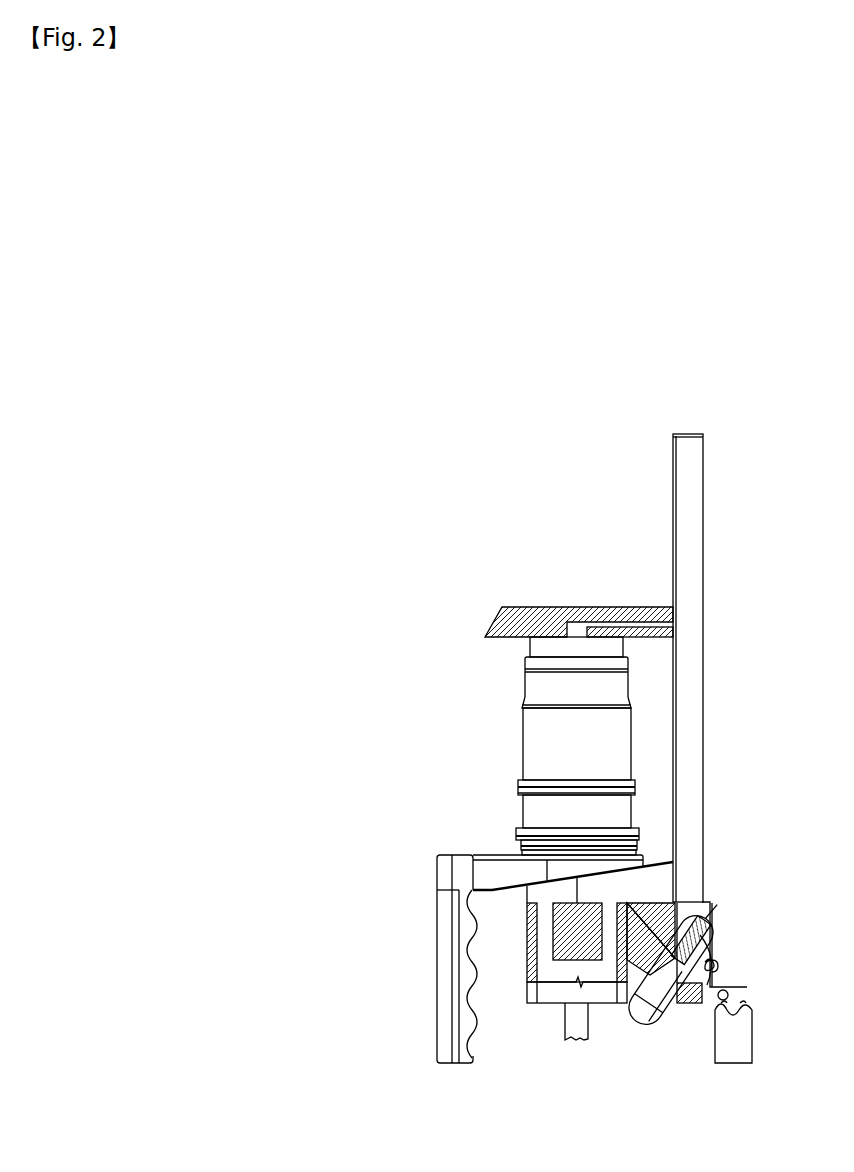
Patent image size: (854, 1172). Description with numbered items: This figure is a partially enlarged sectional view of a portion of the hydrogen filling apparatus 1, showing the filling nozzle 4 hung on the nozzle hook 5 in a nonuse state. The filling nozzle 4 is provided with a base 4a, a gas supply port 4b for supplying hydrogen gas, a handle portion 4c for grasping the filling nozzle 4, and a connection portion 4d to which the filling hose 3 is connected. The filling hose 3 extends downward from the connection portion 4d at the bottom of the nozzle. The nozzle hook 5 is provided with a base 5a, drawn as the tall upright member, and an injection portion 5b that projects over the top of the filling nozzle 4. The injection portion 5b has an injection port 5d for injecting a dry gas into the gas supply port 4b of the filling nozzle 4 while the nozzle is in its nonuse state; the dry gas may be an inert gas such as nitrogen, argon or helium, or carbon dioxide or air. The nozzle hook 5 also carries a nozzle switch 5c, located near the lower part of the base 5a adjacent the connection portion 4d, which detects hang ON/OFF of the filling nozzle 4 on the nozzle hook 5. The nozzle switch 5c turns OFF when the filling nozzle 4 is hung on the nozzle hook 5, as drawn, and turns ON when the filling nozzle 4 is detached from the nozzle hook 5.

The tool holder fixing device 1 is at (607, 394).
The filling hose 3 is at (588, 1033).
The filling nozzle 4 is at (470, 765).
The base 4a is at (522, 733).
The gas supply port 4b is at (530, 648).
The handle portion 4c is at (437, 967).
The connection portion 4d is at (507, 990).
The nozzle hook 5 is at (727, 513).
The base 5a is at (703, 824).
The injection portion 5b is at (620, 607).
The nozzle switch 5c is at (658, 1032).
The injection port 5d is at (577, 635).